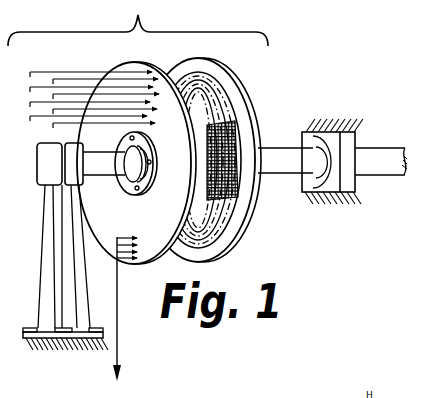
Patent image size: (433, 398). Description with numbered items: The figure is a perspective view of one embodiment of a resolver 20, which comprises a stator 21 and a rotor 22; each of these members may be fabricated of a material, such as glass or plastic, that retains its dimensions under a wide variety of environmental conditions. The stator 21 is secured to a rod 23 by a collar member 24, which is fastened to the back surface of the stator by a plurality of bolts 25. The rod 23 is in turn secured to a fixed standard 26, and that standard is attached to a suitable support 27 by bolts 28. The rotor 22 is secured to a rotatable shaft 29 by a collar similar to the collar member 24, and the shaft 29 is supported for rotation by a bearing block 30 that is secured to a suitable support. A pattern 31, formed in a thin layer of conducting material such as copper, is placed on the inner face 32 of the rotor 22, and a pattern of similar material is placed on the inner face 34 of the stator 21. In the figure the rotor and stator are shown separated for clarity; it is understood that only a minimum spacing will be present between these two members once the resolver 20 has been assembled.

The resolver 20 is at (252, 103).
The stator 21 is at (133, 62).
The rotor 22 is at (247, 55).
The rod 23 is at (105, 173).
The collar member 24 is at (139, 152).
The bolts 25 is at (150, 186).
The fixed standard 26 is at (80, 255).
The support 27 is at (68, 349).
The bolts 28 is at (95, 328).
The rotatable shaft 29 is at (278, 149).
The bearing block 30 is at (351, 138).
The pattern 31 is at (240, 194).
The inner face of the rotor 32 is at (224, 100).
The inner face of stator 34 is at (158, 262).